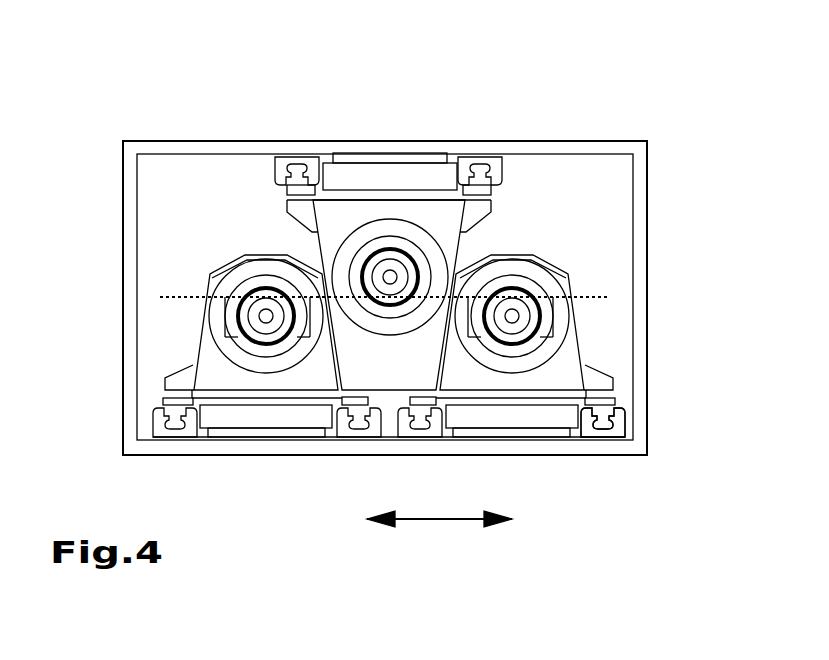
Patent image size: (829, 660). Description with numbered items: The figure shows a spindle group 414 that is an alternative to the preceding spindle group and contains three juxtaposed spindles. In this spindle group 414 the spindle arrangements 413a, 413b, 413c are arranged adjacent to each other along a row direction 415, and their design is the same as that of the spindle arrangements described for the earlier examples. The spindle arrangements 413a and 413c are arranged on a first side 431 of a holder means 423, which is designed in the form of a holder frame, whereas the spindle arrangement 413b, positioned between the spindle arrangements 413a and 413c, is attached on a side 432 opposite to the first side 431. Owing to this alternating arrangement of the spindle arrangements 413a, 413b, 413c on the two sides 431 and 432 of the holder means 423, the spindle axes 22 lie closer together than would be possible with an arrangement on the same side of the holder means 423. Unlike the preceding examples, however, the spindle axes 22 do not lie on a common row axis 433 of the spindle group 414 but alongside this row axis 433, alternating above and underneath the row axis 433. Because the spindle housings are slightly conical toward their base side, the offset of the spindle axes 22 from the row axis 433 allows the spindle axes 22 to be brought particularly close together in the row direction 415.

The spindle group 414 is at (540, 104).
The spindle arrangement 413a is at (255, 252).
The spindle arrangement 413b is at (366, 155).
The spindle arrangement 413c is at (540, 252).
The spindle axis 22 is at (389, 301).
The row axis 433 is at (192, 293).
The side 432 is at (608, 157).
The first side 431 is at (613, 440).
The holder means 423 is at (406, 484).
The row direction 415 is at (448, 519).